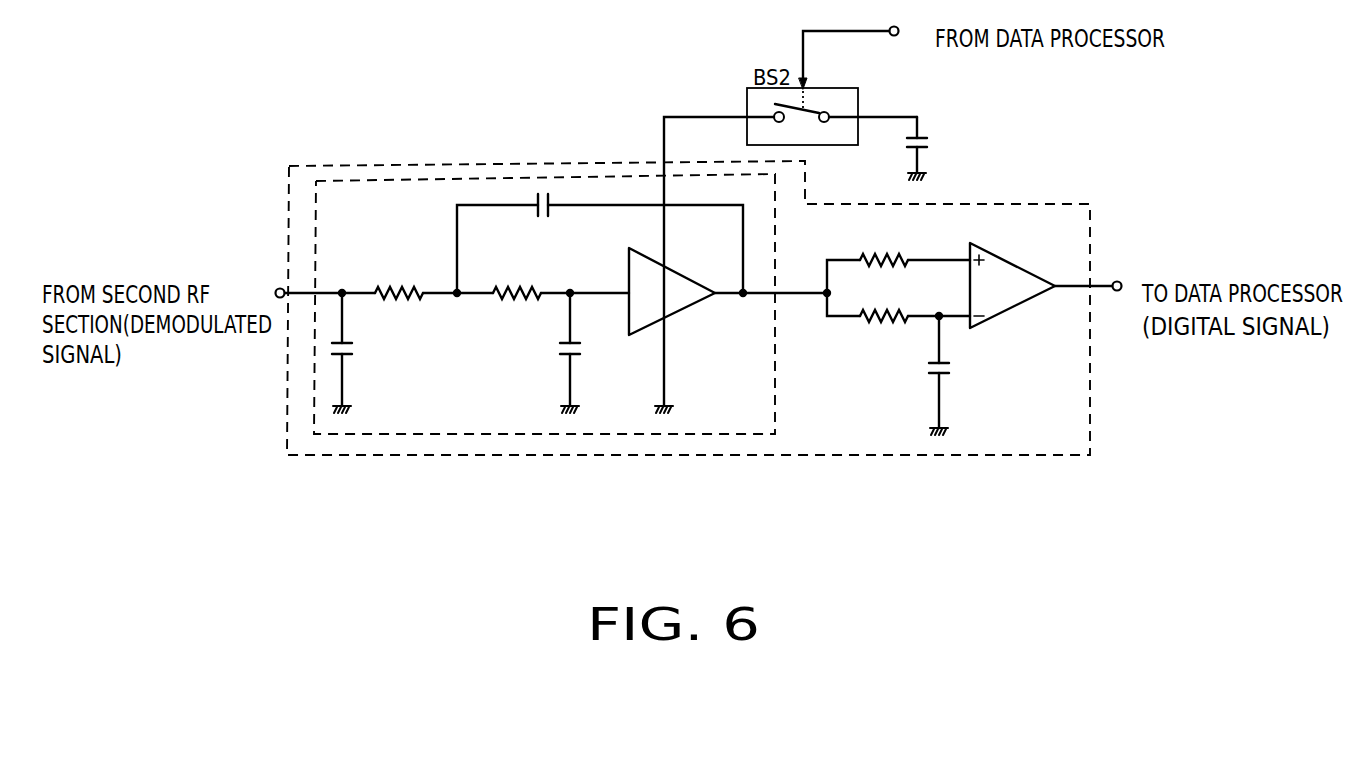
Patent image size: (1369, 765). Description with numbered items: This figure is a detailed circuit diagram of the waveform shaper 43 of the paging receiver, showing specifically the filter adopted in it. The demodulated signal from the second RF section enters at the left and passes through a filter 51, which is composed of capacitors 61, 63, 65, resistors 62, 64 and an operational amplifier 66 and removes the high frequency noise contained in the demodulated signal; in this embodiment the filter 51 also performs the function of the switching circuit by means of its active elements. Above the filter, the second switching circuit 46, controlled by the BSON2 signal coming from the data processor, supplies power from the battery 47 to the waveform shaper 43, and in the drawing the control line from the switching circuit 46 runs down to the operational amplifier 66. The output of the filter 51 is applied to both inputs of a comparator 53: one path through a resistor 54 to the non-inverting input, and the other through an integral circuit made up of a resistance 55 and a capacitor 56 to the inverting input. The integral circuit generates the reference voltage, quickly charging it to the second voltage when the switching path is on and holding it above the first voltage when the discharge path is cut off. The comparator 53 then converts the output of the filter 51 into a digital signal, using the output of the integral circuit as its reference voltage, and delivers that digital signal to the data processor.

The waveform shaper 43 is at (1090, 404).
The second switching circuit 46 is at (858, 100).
The battery 47 is at (931, 148).
The filter 51 is at (544, 337).
The comparator 53 is at (1018, 265).
The resistor 54 is at (898, 262).
The resistance 55 is at (898, 305).
The capacitor 56 is at (952, 374).
The capacitor 61 is at (355, 353).
The resistor 62 is at (399, 281).
The capacitor 63 is at (543, 218).
The resistor 64 is at (517, 280).
The capacitor 65 is at (583, 353).
The operational amplifier 66 is at (682, 271).